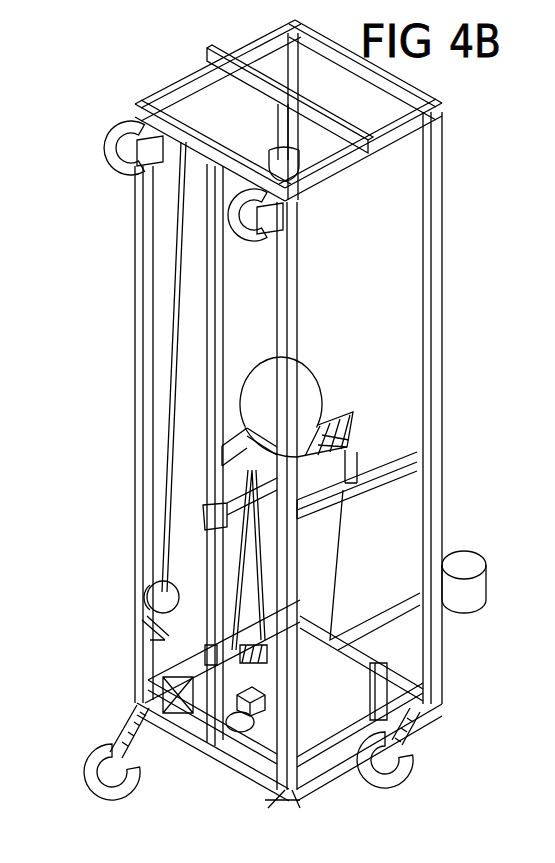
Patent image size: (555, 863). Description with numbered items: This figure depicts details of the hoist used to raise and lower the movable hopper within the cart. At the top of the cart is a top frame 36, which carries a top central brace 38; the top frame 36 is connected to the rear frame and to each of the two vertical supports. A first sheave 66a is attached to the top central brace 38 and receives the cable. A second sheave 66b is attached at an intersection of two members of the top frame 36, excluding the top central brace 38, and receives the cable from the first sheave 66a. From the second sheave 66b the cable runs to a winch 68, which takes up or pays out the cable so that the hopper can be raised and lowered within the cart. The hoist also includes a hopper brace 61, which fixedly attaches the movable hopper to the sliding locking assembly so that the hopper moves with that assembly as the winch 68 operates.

The top frame 36 is at (417, 97).
The top central brace 38 is at (207, 50).
The first sheave 66a is at (299, 168).
The second sheave 66b is at (181, 175).
The hopper brace 61 is at (358, 455).
The winch 68 is at (147, 608).